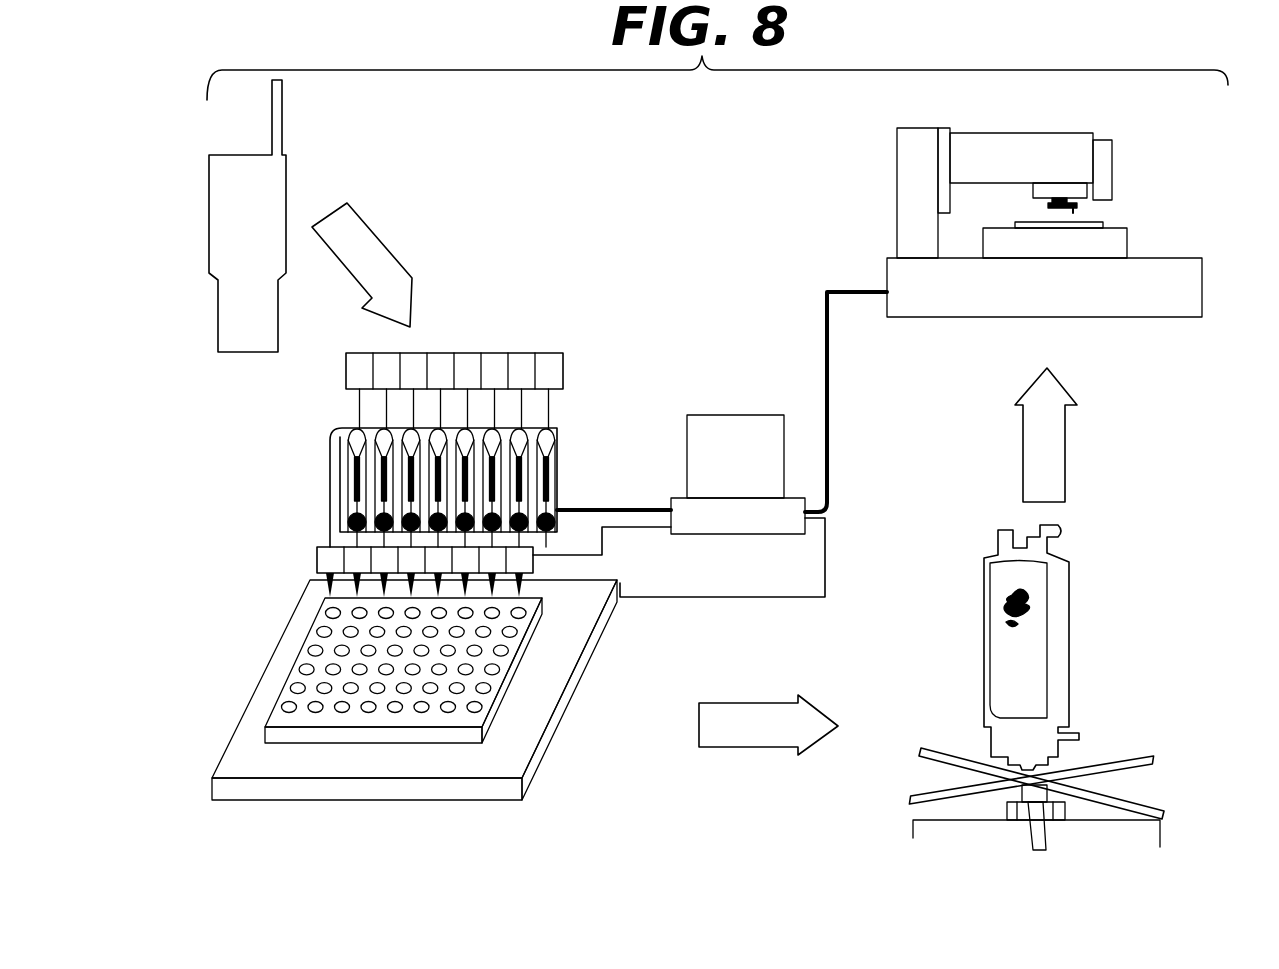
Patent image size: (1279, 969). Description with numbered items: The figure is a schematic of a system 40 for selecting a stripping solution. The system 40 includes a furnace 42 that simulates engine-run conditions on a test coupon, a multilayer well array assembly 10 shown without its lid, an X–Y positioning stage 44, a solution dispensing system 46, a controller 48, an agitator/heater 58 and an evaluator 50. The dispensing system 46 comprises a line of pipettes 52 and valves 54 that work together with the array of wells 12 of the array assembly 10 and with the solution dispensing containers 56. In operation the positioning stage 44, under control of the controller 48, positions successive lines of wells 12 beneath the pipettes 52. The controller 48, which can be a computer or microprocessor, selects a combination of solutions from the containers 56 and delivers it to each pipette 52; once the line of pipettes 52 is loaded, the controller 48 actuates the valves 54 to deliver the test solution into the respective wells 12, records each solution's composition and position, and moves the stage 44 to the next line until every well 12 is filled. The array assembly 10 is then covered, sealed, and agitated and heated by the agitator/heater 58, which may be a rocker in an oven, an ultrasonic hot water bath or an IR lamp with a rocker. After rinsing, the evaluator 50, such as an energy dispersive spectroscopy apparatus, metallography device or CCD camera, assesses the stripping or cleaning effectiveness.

The array assembly 10 is at (502, 693).
The wells 12 is at (293, 688).
The system 40 is at (574, 252).
The furnace 42 is at (285, 186).
The X–Y positioning stage 44 is at (550, 733).
The solution dispensing system 46 is at (569, 436).
The controller 48 is at (735, 415).
The evaluator 50 is at (1205, 292).
The pipettes 52 is at (347, 482).
The valves 54 is at (317, 557).
The solution dispensing containers 56 is at (383, 353).
The agitator/heater 58 is at (1102, 634).